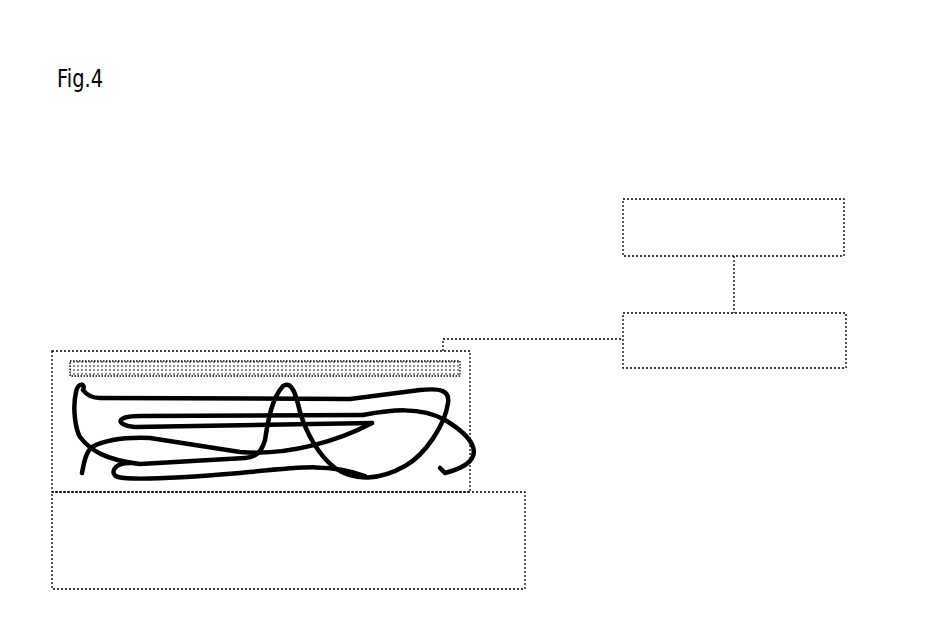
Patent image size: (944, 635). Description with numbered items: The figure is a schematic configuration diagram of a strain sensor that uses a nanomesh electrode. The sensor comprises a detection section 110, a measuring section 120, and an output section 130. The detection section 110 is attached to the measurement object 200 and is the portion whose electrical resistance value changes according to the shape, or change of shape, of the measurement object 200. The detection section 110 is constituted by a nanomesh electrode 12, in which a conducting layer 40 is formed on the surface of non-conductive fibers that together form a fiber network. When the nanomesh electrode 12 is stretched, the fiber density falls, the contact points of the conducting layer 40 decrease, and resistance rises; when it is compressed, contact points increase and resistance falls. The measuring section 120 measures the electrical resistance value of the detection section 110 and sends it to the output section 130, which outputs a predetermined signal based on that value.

The nanomesh electrode 12 is at (445, 432).
The conducting layer 40 is at (460, 370).
The detection section 110 is at (253, 350).
The measuring section 120 is at (735, 370).
The output section 130 is at (622, 231).
The measurement object 200 is at (527, 541).